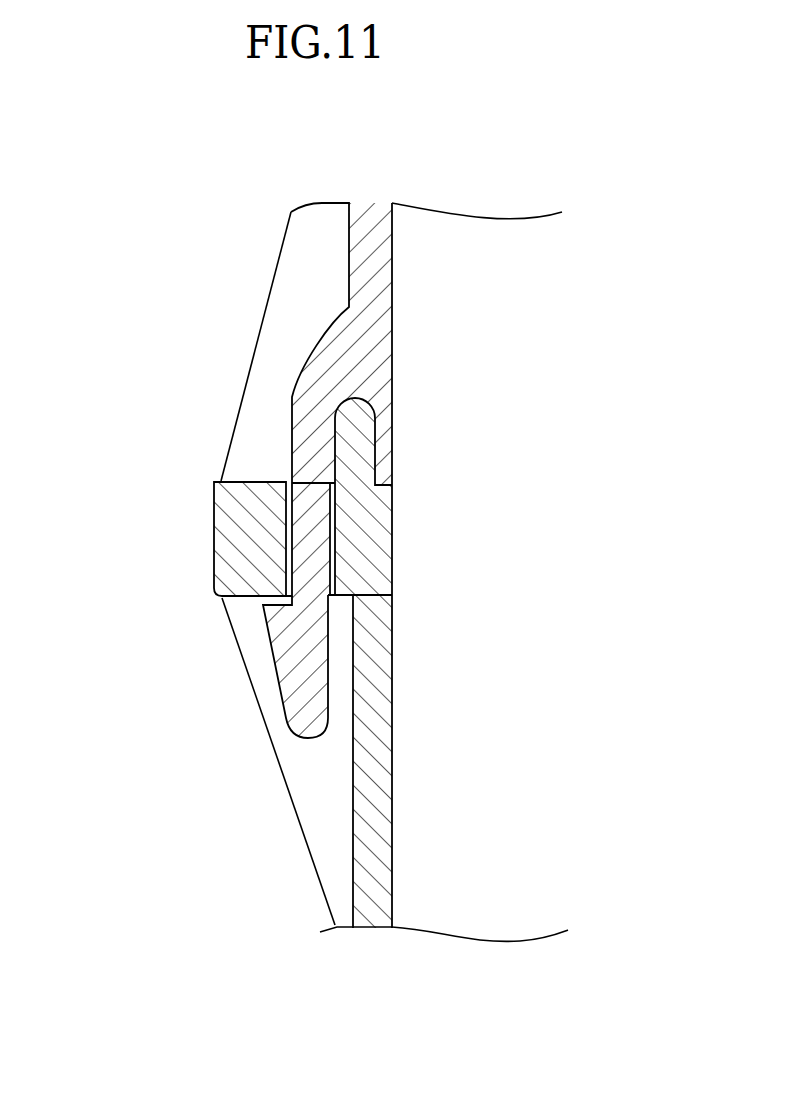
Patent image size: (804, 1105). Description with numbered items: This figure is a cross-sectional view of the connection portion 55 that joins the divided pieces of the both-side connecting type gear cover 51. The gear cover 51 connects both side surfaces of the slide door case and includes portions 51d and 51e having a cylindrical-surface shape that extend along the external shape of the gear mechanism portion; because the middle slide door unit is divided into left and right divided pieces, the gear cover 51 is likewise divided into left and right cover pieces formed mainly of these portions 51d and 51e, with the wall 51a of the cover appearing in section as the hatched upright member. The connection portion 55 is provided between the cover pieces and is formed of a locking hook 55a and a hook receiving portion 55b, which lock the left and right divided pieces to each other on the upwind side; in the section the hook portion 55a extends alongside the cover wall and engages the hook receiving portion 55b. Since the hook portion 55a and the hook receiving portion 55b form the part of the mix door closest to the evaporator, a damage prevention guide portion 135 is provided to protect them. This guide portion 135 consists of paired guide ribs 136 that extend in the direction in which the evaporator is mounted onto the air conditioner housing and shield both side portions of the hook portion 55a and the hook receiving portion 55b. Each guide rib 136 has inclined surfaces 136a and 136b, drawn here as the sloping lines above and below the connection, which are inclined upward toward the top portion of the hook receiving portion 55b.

The gear cover 51 is at (429, 566).
The side wall portion 51a is at (360, 496).
The cylindrical-surface shaped portion 51d is at (426, 344).
The cylindrical-surface shaped portion 51e is at (444, 768).
The connection portion 55 is at (189, 578).
The locking hook 55a is at (285, 652).
The hook receiving portion 55b is at (243, 503).
The damage prevention guide portion 135 is at (212, 568).
The guide ribs 136 is at (278, 568).
The inclined surface 136a is at (256, 346).
The inclined surface 136b is at (278, 761).